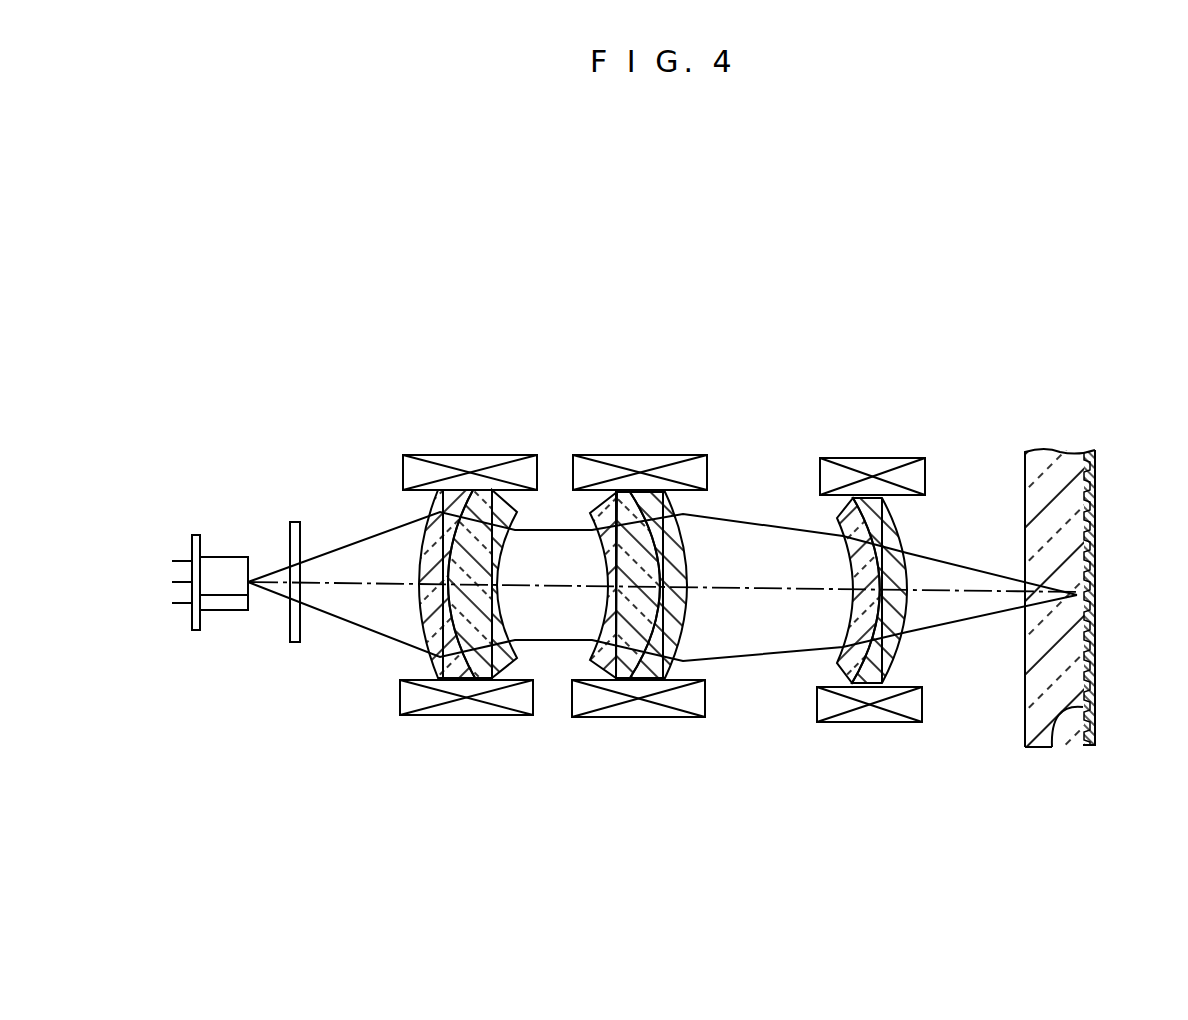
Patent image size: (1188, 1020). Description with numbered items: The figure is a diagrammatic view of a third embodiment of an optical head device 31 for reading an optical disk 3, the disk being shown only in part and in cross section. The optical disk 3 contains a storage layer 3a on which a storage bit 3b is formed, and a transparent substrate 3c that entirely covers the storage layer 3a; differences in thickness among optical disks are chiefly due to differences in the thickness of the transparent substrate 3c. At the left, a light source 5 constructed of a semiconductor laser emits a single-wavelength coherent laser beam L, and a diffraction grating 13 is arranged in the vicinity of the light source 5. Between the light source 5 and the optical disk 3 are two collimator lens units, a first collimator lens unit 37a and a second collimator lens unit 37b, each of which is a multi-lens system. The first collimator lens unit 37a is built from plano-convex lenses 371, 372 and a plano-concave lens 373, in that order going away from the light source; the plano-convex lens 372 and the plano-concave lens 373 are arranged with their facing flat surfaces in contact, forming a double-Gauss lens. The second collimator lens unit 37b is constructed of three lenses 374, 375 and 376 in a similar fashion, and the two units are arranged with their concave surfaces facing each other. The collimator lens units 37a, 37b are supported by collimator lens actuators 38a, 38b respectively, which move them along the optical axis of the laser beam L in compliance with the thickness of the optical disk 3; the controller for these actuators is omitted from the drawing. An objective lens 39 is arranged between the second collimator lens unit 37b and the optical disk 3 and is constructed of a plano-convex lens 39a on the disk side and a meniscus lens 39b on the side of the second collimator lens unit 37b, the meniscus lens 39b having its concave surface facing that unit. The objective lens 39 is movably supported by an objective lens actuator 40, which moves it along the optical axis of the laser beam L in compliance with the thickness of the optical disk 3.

The optical head device 31 is at (415, 107).
The optical disk 3 is at (1085, 340).
The storage layer 3a is at (1123, 665).
The storage bit 3b is at (1058, 812).
The transparent substrate 3c is at (1031, 664).
The light source 5 is at (210, 646).
The diffraction grating 13 is at (289, 657).
The laser beam L is at (662, 534).
The first collimator lens unit 37a is at (537, 827).
The second collimator lens unit 37b is at (775, 827).
The plano-convex lens 371 is at (425, 622).
The plano-convex lens 372 is at (470, 665).
The plano-concave lens 373 is at (517, 655).
The lens 374 is at (683, 623).
The lens 375 is at (638, 660).
The lens 376 is at (590, 660).
The collimator lens actuator 38a is at (468, 512).
The collimator lens actuator 38b is at (639, 513).
The objective lens 39 is at (970, 262).
The plano-convex lens 39a is at (900, 532).
The meniscus lens 39b is at (836, 468).
The objective lens actuator 40 is at (871, 662).